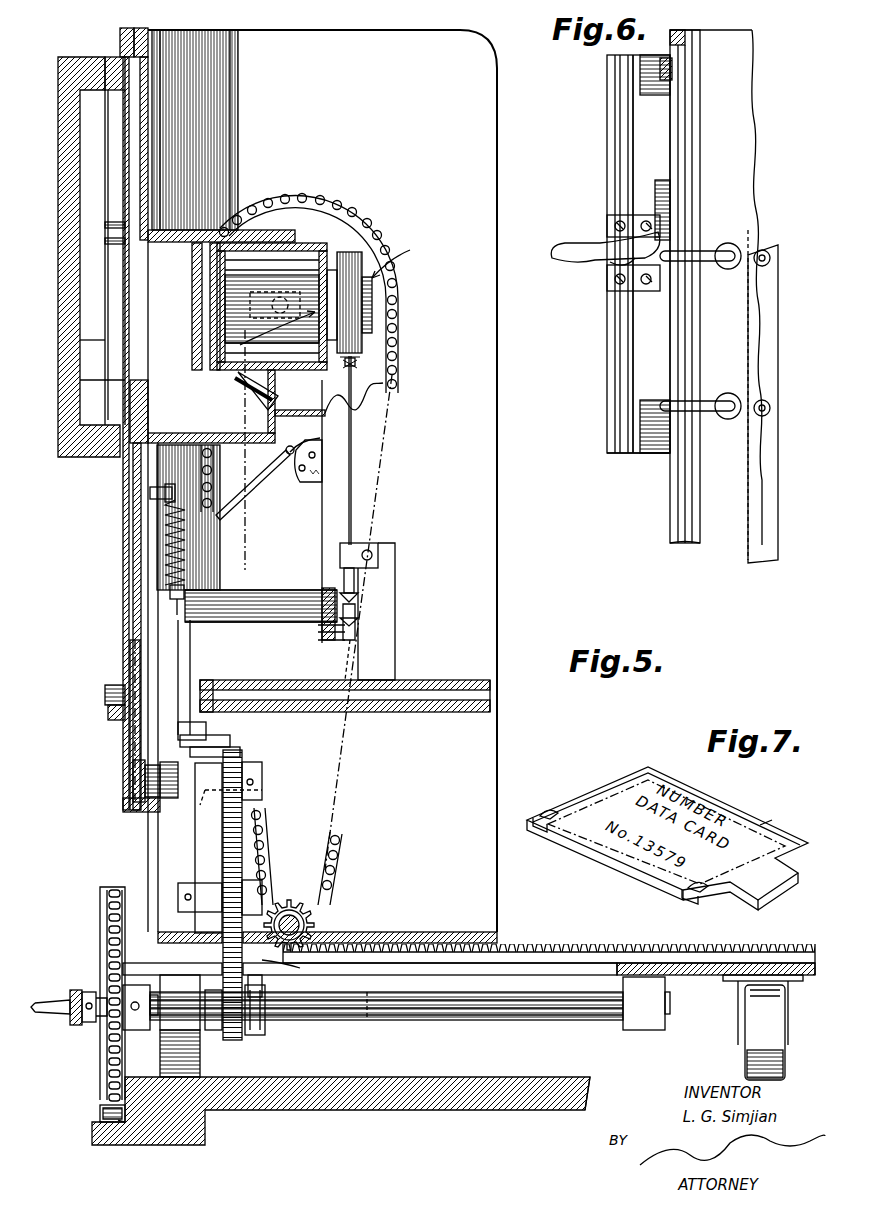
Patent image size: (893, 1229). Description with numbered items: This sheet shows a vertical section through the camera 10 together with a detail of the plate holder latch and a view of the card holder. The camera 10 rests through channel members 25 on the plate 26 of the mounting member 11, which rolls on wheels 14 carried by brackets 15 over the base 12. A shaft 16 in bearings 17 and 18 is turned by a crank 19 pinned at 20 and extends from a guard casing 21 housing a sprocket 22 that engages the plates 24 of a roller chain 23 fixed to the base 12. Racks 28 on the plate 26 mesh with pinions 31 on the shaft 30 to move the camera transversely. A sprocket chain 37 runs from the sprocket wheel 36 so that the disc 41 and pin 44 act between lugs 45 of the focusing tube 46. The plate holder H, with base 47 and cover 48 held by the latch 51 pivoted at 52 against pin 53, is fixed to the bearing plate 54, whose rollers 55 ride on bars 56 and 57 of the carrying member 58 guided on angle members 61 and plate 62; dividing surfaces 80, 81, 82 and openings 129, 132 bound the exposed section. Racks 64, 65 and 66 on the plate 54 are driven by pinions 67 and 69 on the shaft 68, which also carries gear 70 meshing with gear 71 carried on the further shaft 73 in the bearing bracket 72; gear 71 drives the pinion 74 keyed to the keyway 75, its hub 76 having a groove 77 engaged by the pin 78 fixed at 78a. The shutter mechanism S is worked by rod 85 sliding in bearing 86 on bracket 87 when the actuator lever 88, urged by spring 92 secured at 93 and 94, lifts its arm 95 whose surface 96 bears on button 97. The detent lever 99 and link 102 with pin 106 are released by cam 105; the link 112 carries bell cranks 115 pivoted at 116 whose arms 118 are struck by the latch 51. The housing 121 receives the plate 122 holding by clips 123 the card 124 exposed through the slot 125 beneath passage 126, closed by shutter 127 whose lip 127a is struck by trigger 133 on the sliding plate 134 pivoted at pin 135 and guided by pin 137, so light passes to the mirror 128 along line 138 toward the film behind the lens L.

In FIG. 5, the camera 10 is at (512, 528).
In FIG. 5, the plate holder H is at (68, 52).
In FIG. 6, the plate holder H is at (640, 462).
In FIG. 5, the mounting member 11 is at (705, 976).
In FIG. 5, the base 12 is at (340, 1098).
In FIG. 5, the wheels 14 is at (760, 1055).
In FIG. 5, the brackets 15 is at (152, 1032).
In FIG. 5, the shaft 16 is at (508, 1010).
In FIG. 5, the bearing 17 is at (186, 1018).
In FIG. 5, the bearing 18 is at (648, 1022).
In FIG. 5, the crank 19 is at (40, 1003).
In FIG. 5, the pin connection 20 is at (88, 1012).
In FIG. 5, the guard casing 21 is at (105, 905).
In FIG. 5, the sprocket 22 is at (103, 895).
In FIG. 5, the roller chain 23 is at (100, 1110).
In FIG. 5, the plates 24 is at (105, 1125).
In FIG. 5, the channel members 25 is at (482, 932).
In FIG. 5, the plate 26 is at (636, 964).
In FIG. 5, the racks 28 is at (760, 946).
In FIG. 5, the shaft 30 is at (310, 915).
In FIG. 5, the pinions 31 is at (318, 900).
In FIG. 5, the sprocket wheel 36 is at (398, 355).
In FIG. 5, the sprocket chain 37 is at (398, 385).
In FIG. 5, the second disc 41 is at (200, 290).
In FIG. 5, the pin 44 is at (262, 312).
In FIG. 5, the lugs 45 is at (298, 262).
In FIG. 5, the camera focusing tube 46 is at (298, 262).
In FIG. 6, the base 47 is at (640, 160).
In FIG. 6, the cover 48 is at (612, 147).
In FIG. 6, the latch 51 is at (570, 245).
In FIG. 6, the pivot 52 is at (612, 282).
In FIG. 6, the pin 53 is at (615, 265).
In FIG. 5, the bearing plate 54 is at (122, 528).
In FIG. 6, the bearing plate 54 is at (672, 512).
In FIG. 5, the bearing rollers 55 is at (112, 690).
In FIG. 6, the bearing rollers 55 is at (673, 70).
In FIG. 5, the bar 56 is at (110, 712).
In FIG. 5, the bar 57 is at (122, 35).
In FIG. 6, the bar 57 is at (665, 35).
In FIG. 5, the carrying member 58 is at (138, 32).
In FIG. 6, the carrying member 58 is at (688, 105).
In FIG. 5, the structural right angle members 61 is at (232, 110).
In FIG. 5, the plate 62 is at (146, 108).
In FIG. 5, the horizontal rack 64 is at (130, 596).
In FIG. 5, the horizontal rack 65 is at (130, 800).
In FIG. 5, the vertical rack 66 is at (130, 648).
In FIG. 5, the pinion 67 is at (140, 780).
In FIG. 5, the shaft 68 is at (262, 806).
In FIG. 5, the pinion 69 is at (170, 800).
In FIG. 5, the gear 70 is at (262, 788).
In FIG. 5, the gear 71 is at (268, 845).
In FIG. 5, the bearing bracket 72 is at (200, 880).
In FIG. 5, the bar 73 is at (196, 836).
In FIG. 5, the pinion 74 is at (235, 1032).
In FIG. 5, the keyway 75 is at (370, 1020).
In FIG. 5, the hub 76 is at (268, 1020).
In FIG. 5, the groove 77 is at (266, 1032).
In FIG. 5, the pin 78 is at (262, 982).
In FIG. 5, the pin mounting 78a is at (295, 968).
In FIG. 5, the dividing surface 80 is at (110, 236).
In FIG. 5, the dividing surface 81 is at (110, 224).
In FIG. 5, the dividing surface 82 is at (82, 340).
In FIG. 5, the rod 85 is at (354, 460).
In FIG. 5, the bearing 86 is at (356, 543).
In FIG. 5, the bracket 87 is at (395, 572).
In FIG. 5, the shutter actuator lever 88 is at (258, 588).
In FIG. 5, the spring 92 is at (170, 565).
In FIG. 5, the spring attachment 93 is at (182, 588).
In FIG. 5, the spring attachment 94 is at (150, 493).
In FIG. 5, the arm 95 is at (352, 655).
In FIG. 5, the surface 96 is at (356, 622).
In FIG. 5, the button 97 is at (354, 604).
In FIG. 5, the detent lever 99 is at (190, 660).
In FIG. 5, the link 102 is at (220, 735).
In FIG. 5, the cam 105 is at (242, 755).
In FIG. 5, the pin 106 is at (232, 742).
In FIG. 6, the link 112 is at (765, 340).
In FIG. 6, the bell cranks 115 is at (758, 256).
In FIG. 6, the pivot 116 is at (768, 264).
In FIG. 6, the arms 118 is at (725, 250).
In FIG. 5, the box-like housing 121 is at (398, 706).
In FIG. 7, the plate 122 is at (612, 890).
In FIG. 7, the clips 123 is at (545, 812).
In FIG. 7, the number and data card 124 is at (760, 822).
In FIG. 5, the slot 125 is at (240, 682).
In FIG. 5, the passage 126 is at (236, 512).
In FIG. 5, the shutter 127 is at (248, 528).
In FIG. 5, the lip 127a is at (322, 440).
In FIG. 5, the mirror 128 is at (258, 398).
In FIG. 5, the partitioned opening 129 is at (80, 380).
In FIG. 5, the partitioned opening 132 is at (110, 240).
In FIG. 5, the trigger 133 is at (326, 445).
In FIG. 5, the sliding plate 134 is at (326, 470).
In FIG. 5, the pin 135 is at (328, 640).
In FIG. 5, the pin 137 is at (328, 408).
In FIG. 5, the line 138 is at (172, 378).
In FIG. 5, the shutter mechanism S is at (397, 255).
In FIG. 5, the lens L is at (274, 330).